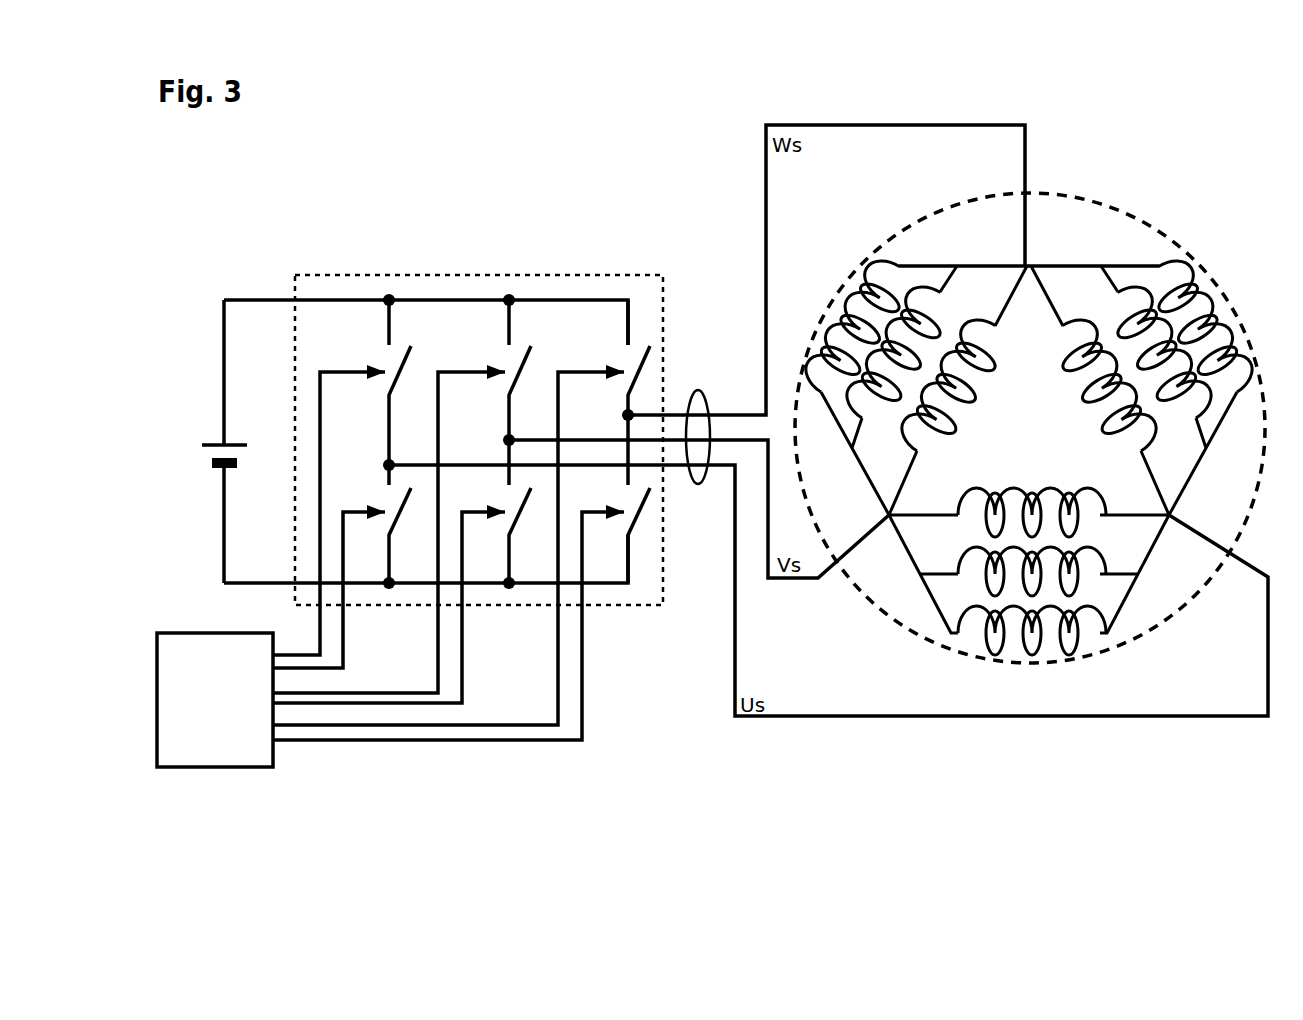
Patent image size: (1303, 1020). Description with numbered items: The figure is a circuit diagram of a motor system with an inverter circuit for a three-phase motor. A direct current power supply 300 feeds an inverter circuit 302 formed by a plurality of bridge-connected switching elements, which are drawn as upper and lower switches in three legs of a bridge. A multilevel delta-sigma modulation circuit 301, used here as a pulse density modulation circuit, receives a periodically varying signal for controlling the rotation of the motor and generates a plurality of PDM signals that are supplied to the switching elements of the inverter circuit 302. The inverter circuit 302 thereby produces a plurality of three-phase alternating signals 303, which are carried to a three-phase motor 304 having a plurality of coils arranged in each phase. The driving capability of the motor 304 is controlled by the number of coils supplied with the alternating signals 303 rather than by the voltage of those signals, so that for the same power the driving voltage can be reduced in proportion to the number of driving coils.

The direct current power supply 300 is at (212, 436).
The multilevel delta-sigma modulation circuit 301 is at (211, 630).
The inverter circuit 302 is at (425, 272).
The three-phase alternating signals 303 is at (699, 390).
The three-phase motor 304 is at (1165, 230).